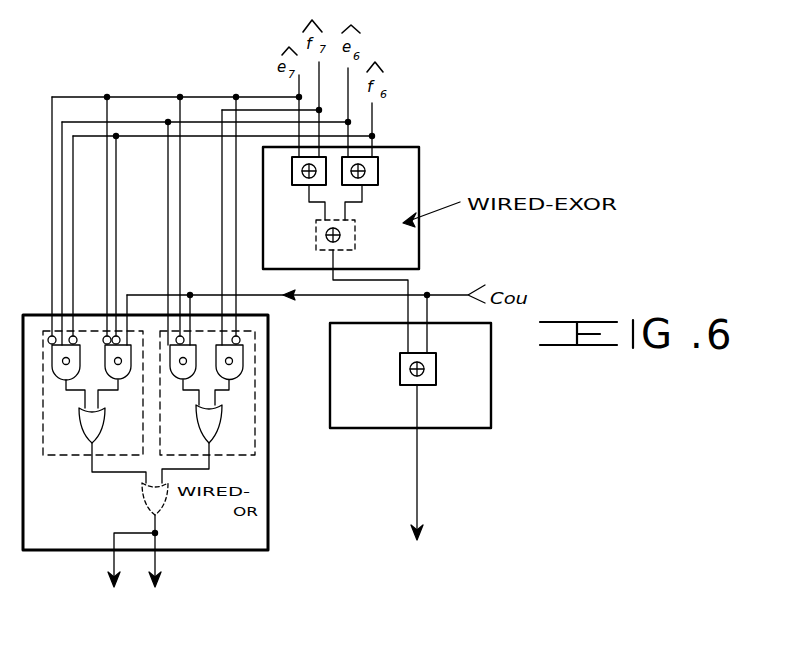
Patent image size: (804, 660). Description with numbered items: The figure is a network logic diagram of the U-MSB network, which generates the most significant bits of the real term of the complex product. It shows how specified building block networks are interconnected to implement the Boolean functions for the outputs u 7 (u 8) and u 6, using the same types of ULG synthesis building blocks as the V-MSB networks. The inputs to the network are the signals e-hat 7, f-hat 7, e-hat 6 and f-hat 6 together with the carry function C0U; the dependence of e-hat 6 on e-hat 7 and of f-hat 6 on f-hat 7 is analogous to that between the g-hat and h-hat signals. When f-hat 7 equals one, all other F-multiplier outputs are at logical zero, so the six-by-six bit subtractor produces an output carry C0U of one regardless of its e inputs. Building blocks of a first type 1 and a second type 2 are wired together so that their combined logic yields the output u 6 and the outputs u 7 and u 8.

The modulo-2 adder cell 1 is at (267, 403).
The wired-EXOR unit 2 is at (341, 208).
The output signal u6 (bit 6) 6 is at (422, 481).
The output signal u7 (bit 7) 7 is at (157, 568).
The output signal u8 (bit 8) 8 is at (126, 580).